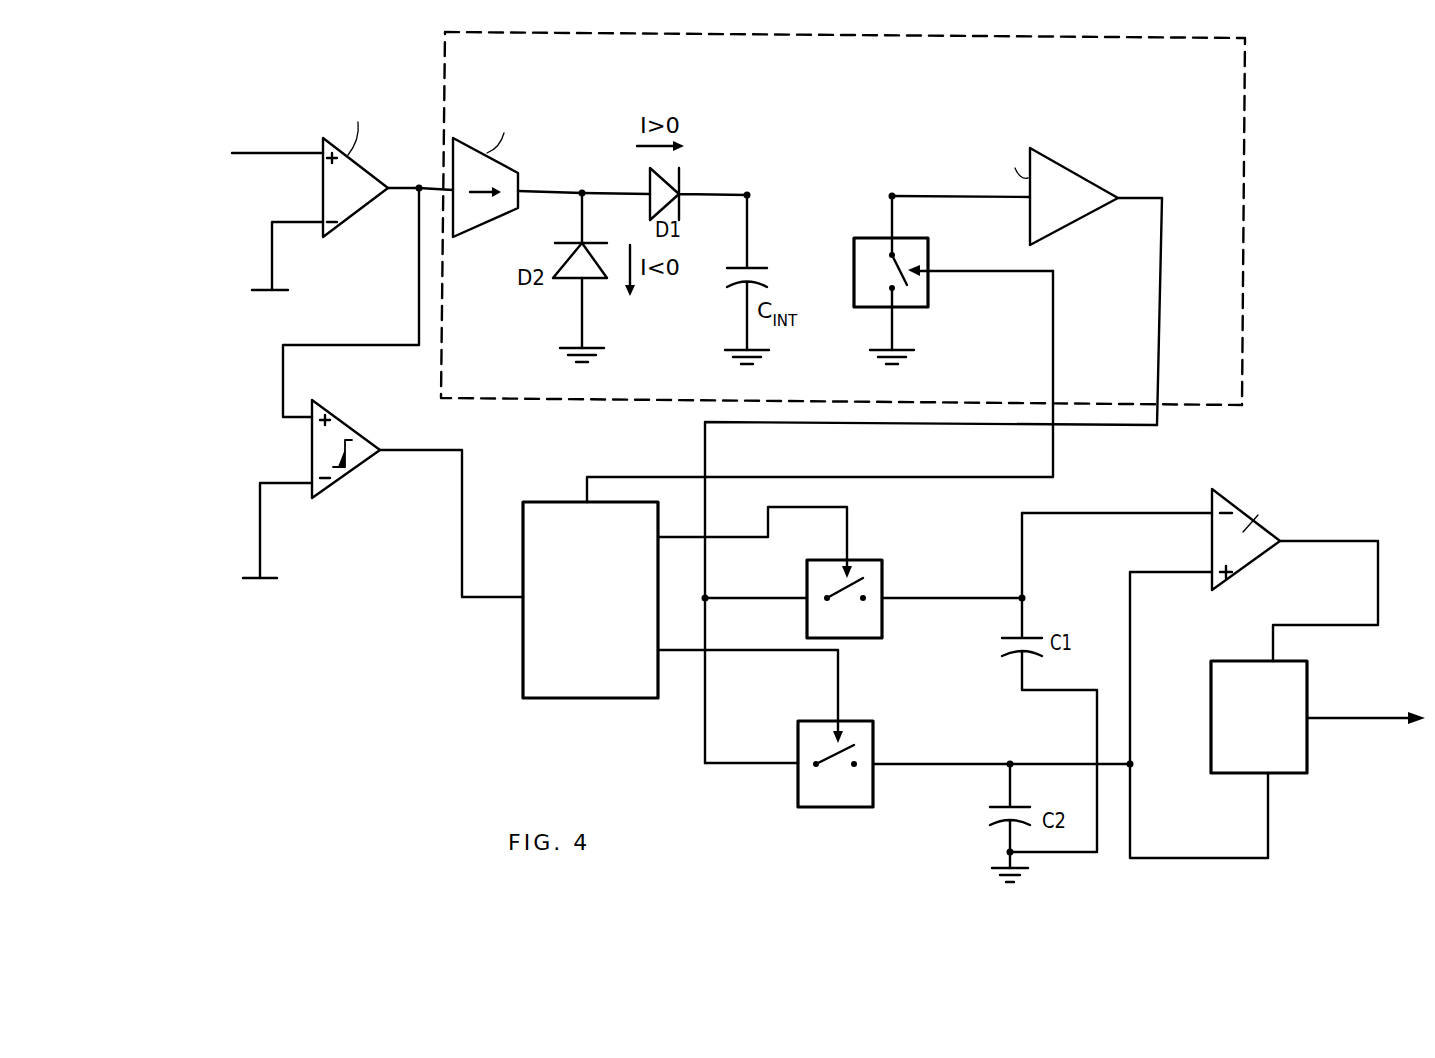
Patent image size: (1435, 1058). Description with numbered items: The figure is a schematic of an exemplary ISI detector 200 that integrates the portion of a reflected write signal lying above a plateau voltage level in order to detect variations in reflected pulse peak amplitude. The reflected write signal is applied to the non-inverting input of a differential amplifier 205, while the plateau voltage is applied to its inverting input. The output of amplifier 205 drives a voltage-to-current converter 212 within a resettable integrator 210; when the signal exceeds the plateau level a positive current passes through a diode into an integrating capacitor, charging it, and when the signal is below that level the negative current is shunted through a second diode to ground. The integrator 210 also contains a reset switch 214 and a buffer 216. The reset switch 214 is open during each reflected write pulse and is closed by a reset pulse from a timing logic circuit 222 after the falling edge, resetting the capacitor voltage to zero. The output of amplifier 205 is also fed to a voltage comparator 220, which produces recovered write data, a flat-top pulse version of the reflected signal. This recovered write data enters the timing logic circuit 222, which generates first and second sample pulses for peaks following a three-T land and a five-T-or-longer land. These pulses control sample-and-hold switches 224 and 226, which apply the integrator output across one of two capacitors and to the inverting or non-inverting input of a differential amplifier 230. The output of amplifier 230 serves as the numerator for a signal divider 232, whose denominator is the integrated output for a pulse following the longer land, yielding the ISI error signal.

The ISI detector 200 is at (250, 110).
The differential amplifier 205 is at (342, 224).
The resettable integrator 210 is at (1245, 140).
The voltage-to-current converter 212 is at (487, 224).
The reset switch 214 is at (854, 250).
The buffer 216 is at (1060, 162).
The voltage comparator 220 is at (357, 436).
The timing logic circuit 222 is at (520, 680).
The sample-and-hold switch 224 is at (807, 572).
The sample-and-hold switch 226 is at (797, 793).
The differential amplifier 230 is at (1212, 543).
The signal divider 232 is at (1310, 673).